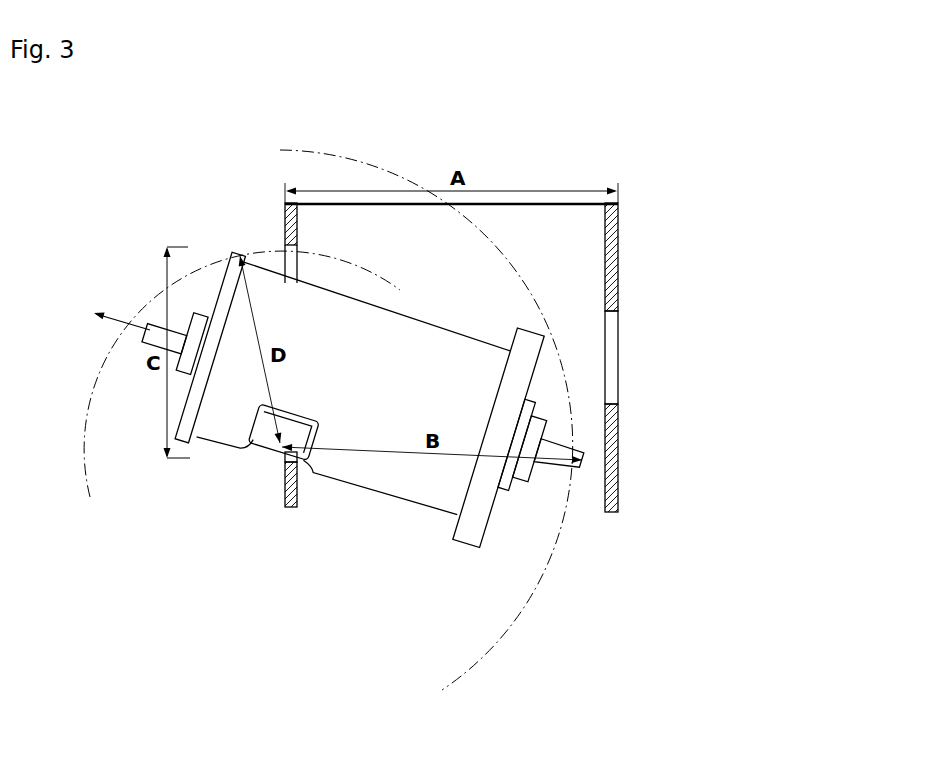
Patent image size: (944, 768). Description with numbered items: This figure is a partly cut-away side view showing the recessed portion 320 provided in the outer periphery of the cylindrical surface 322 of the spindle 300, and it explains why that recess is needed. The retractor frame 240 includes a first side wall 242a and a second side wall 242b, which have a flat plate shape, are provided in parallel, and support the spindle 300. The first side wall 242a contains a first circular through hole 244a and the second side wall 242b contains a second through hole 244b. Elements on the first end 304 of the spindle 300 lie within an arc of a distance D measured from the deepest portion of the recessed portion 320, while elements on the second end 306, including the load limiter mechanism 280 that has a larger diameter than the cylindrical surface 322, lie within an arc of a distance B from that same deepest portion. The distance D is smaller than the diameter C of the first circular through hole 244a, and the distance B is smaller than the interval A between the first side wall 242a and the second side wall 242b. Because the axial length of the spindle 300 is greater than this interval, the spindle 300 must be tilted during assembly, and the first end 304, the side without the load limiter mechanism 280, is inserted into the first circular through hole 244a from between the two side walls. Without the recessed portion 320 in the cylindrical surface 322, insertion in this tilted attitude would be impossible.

The retractor frame 240 is at (508, 310).
The first side wall 242a is at (300, 227).
The second side wall 242b is at (617, 244).
The first circular through hole 244a is at (300, 275).
The second through hole 244b is at (617, 338).
The load limiter mechanism 280 is at (541, 337).
The spindle 300 is at (378, 392).
The first end 304 is at (148, 340).
The second end 306 is at (579, 470).
The recessed portion 320 is at (268, 448).
The cylindrical surface 322 is at (433, 488).